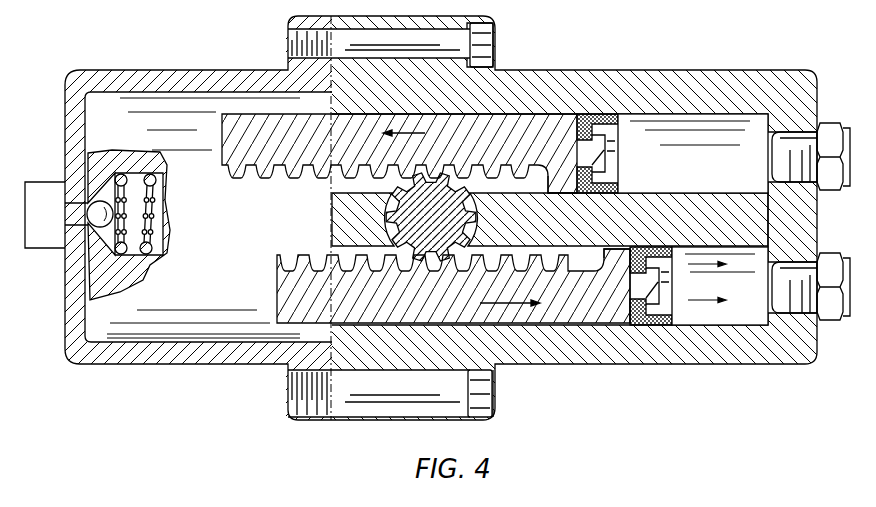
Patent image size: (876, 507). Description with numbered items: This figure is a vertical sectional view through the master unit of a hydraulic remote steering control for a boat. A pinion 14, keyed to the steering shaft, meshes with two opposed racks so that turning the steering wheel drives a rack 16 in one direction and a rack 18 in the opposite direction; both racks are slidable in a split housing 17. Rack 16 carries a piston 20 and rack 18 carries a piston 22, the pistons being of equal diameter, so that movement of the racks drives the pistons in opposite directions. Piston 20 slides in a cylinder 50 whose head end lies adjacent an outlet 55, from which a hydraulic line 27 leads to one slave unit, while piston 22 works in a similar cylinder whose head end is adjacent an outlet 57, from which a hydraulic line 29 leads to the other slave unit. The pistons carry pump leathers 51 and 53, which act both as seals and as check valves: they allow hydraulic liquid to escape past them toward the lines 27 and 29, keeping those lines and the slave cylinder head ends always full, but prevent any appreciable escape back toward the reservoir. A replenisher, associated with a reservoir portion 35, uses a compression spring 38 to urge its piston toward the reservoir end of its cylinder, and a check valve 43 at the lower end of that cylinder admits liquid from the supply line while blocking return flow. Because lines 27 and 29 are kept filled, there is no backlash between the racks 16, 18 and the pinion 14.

The pinion 14 is at (406, 215).
The rack 16 is at (263, 182).
The split housing 17 is at (600, 72).
The rack 18 is at (277, 290).
The piston 20 is at (556, 132).
The piston 22 is at (606, 316).
The hydraulic line 27 is at (845, 123).
The hydraulic line 29 is at (848, 322).
The reservoir portion 35 is at (176, 252).
The compression spring 38 is at (163, 190).
The check valve 43 is at (105, 197).
The cylinder 50 is at (711, 120).
The pump leather 51 is at (618, 163).
The pump leather 53 is at (672, 303).
The outlet 55 is at (772, 165).
The outlet 57 is at (772, 292).